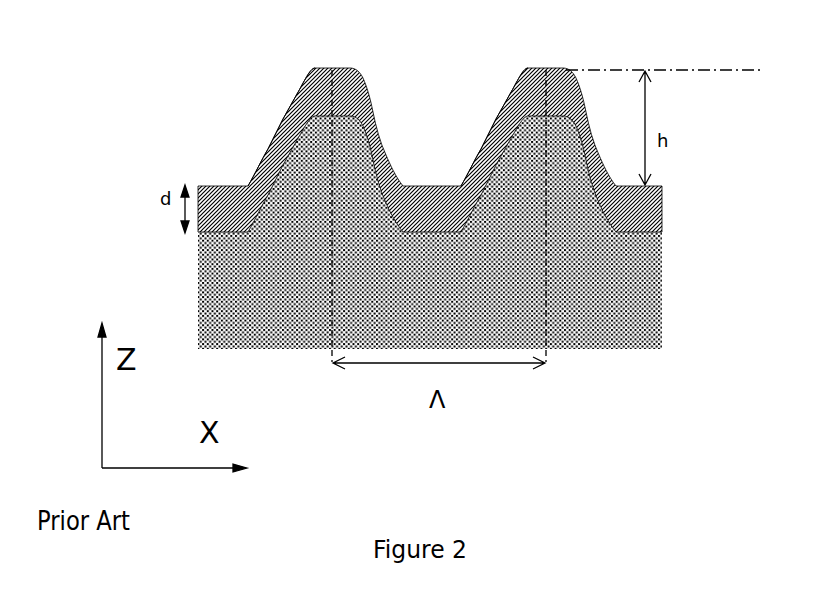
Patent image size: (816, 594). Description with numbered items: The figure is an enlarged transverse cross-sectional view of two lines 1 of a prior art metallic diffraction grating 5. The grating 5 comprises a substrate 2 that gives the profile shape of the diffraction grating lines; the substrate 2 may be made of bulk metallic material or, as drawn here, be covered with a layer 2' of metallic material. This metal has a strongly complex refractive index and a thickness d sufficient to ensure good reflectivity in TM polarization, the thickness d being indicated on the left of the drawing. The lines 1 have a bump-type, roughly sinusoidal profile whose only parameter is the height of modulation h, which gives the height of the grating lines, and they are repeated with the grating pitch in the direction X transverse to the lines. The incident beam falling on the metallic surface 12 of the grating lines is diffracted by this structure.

The line 1 is at (468, 184).
The substrate 2 is at (466, 232).
The layer of metallic material 2' is at (468, 150).
The grating 5 is at (267, 160).
The metallic surface 12 is at (497, 125).